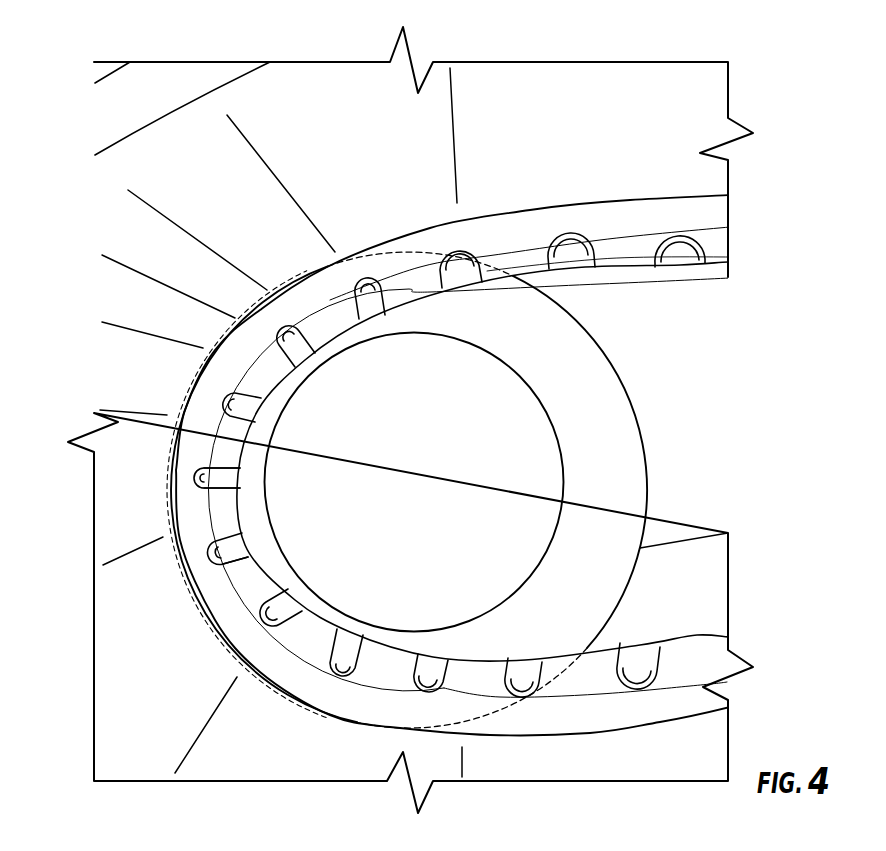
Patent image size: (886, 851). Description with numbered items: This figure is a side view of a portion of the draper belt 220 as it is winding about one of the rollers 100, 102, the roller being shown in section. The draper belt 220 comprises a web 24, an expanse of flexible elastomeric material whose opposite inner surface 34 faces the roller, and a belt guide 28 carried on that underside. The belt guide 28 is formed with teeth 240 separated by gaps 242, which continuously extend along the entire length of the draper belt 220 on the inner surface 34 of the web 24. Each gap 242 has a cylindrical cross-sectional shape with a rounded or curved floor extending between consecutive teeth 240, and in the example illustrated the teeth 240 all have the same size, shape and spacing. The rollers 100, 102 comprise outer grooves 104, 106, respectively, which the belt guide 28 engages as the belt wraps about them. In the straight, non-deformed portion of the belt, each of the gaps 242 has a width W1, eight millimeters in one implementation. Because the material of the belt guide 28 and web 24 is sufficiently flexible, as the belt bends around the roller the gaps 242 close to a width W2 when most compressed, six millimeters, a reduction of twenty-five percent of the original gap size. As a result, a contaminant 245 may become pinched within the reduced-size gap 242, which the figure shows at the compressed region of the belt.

The web 24 is at (717, 103).
The inner surface 34 is at (637, 78).
The draper belt 220 is at (107, 348).
The belt guide 28 is at (722, 217).
The teeth 240 is at (617, 267).
The gaps 242 is at (700, 243).
The contaminant 245 is at (222, 553).
The roller 100 is at (494, 490).
The roller 102 is at (662, 403).
The groove 104 is at (542, 482).
The groove 106 is at (580, 517).
The gap width W1 is at (653, 263).
The compressed gap width W2 is at (240, 469).